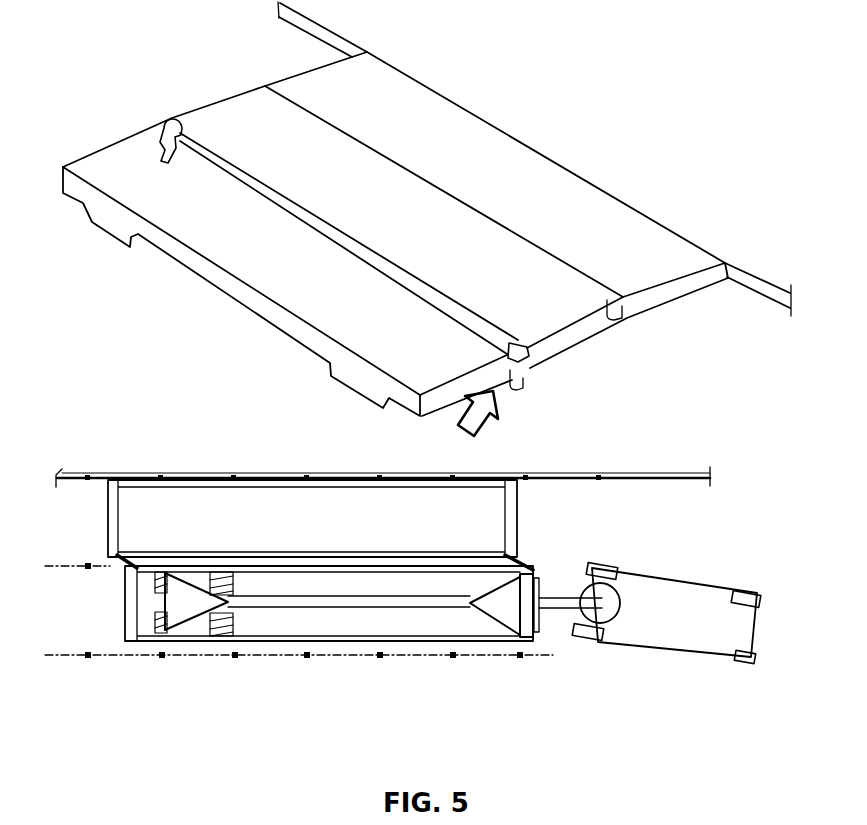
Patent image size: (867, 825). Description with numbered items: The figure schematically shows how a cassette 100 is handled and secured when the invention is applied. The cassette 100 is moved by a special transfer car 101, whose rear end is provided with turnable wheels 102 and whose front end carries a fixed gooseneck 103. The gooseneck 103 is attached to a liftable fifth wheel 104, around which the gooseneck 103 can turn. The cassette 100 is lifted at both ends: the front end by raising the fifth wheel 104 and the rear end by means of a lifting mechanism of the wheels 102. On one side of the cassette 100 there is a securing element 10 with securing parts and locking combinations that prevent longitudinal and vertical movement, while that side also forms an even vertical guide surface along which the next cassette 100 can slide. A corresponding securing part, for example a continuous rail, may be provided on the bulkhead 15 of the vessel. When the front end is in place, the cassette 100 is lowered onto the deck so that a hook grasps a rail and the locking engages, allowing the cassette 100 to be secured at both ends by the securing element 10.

The securing element 10 is at (167, 114).
The bulkhead 15 is at (567, 473).
The cassette 100 is at (229, 106).
The transfer car 101 is at (667, 580).
The turnable wheels 102 is at (197, 642).
The gooseneck 103 is at (560, 608).
The fifth wheel 104 is at (598, 577).